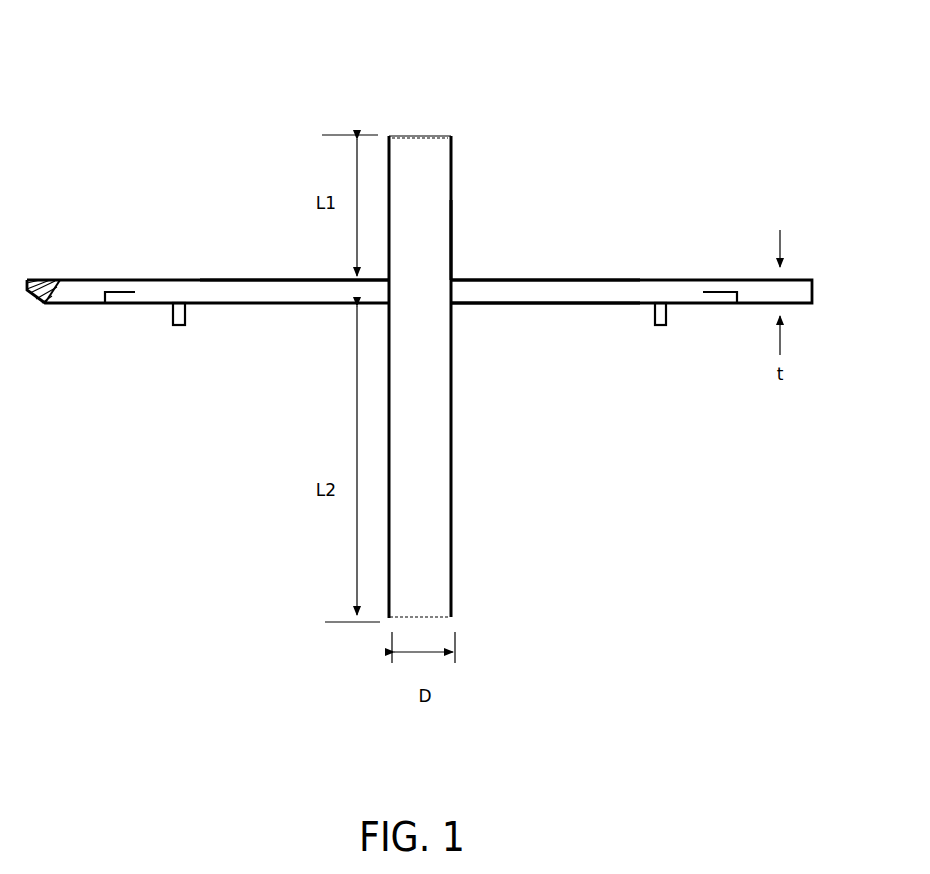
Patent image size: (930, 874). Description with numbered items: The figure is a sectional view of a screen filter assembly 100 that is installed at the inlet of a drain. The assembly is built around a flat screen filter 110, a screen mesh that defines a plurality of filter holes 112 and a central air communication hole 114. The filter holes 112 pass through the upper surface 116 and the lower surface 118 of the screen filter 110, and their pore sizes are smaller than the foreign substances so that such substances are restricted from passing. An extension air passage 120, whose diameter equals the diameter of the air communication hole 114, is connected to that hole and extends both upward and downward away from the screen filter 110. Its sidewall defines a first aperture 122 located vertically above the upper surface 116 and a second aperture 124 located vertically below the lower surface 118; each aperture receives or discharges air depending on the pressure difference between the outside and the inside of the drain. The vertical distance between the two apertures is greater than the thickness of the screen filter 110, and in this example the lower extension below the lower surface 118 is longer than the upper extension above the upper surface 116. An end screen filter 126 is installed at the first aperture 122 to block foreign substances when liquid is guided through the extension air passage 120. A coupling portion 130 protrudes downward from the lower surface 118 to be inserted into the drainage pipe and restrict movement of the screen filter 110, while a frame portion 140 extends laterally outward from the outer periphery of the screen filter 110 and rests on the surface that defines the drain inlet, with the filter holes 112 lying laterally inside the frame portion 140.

The screen filter assembly 100 is at (205, 78).
The screen filter 110 is at (622, 291).
The filter holes 112 is at (272, 278).
The air communication hole 114 is at (460, 274).
The upper surface 116 is at (537, 275).
The lower surface 118 is at (540, 305).
The extension air passage 120 is at (455, 438).
The first aperture 122 is at (458, 140).
The second aperture 124 is at (402, 617).
The end screen filter 126 is at (416, 135).
The coupling portion 130 is at (185, 322).
The frame portion 140 is at (88, 268).